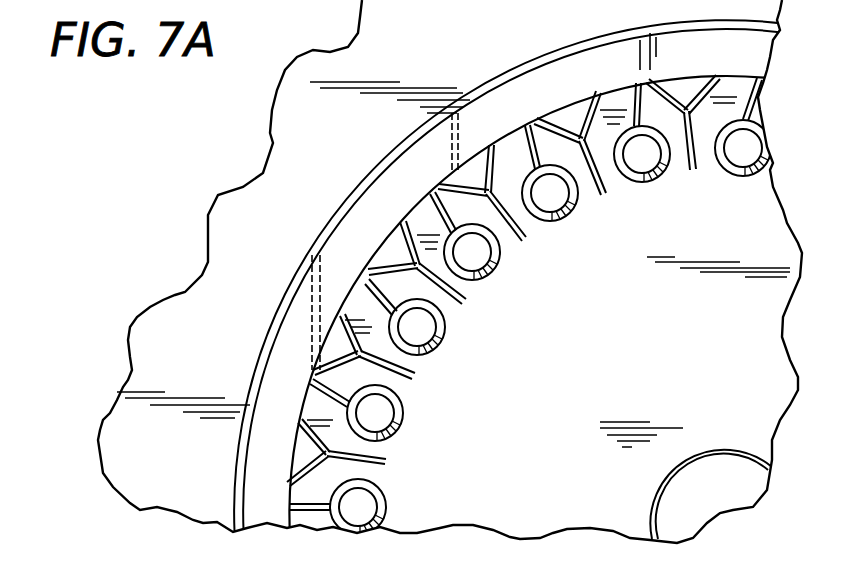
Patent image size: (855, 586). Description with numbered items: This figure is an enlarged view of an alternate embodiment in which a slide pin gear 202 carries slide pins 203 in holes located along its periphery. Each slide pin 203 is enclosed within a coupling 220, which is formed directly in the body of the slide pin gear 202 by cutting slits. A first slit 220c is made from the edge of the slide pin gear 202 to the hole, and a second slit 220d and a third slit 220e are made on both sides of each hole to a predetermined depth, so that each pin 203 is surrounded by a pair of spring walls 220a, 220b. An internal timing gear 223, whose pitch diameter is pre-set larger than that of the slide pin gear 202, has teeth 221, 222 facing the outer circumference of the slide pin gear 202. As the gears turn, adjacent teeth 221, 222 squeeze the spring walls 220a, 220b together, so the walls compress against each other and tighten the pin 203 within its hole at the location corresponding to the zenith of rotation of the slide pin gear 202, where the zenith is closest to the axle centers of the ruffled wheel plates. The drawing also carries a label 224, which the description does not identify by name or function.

The slide pin gear 202 is at (720, 378).
The slide pin 203 is at (418, 328).
The coupling 220 is at (340, 310).
The spring wall 220a is at (283, 142).
The spring wall 220b is at (360, 318).
The first slit 220c is at (385, 295).
The second slit 220d is at (457, 298).
The third slit 220e is at (390, 372).
The tooth 221 is at (327, 345).
The tooth 222 is at (395, 210).
The internal timing gear 223 is at (262, 482).
The body wall 224 is at (118, 462).